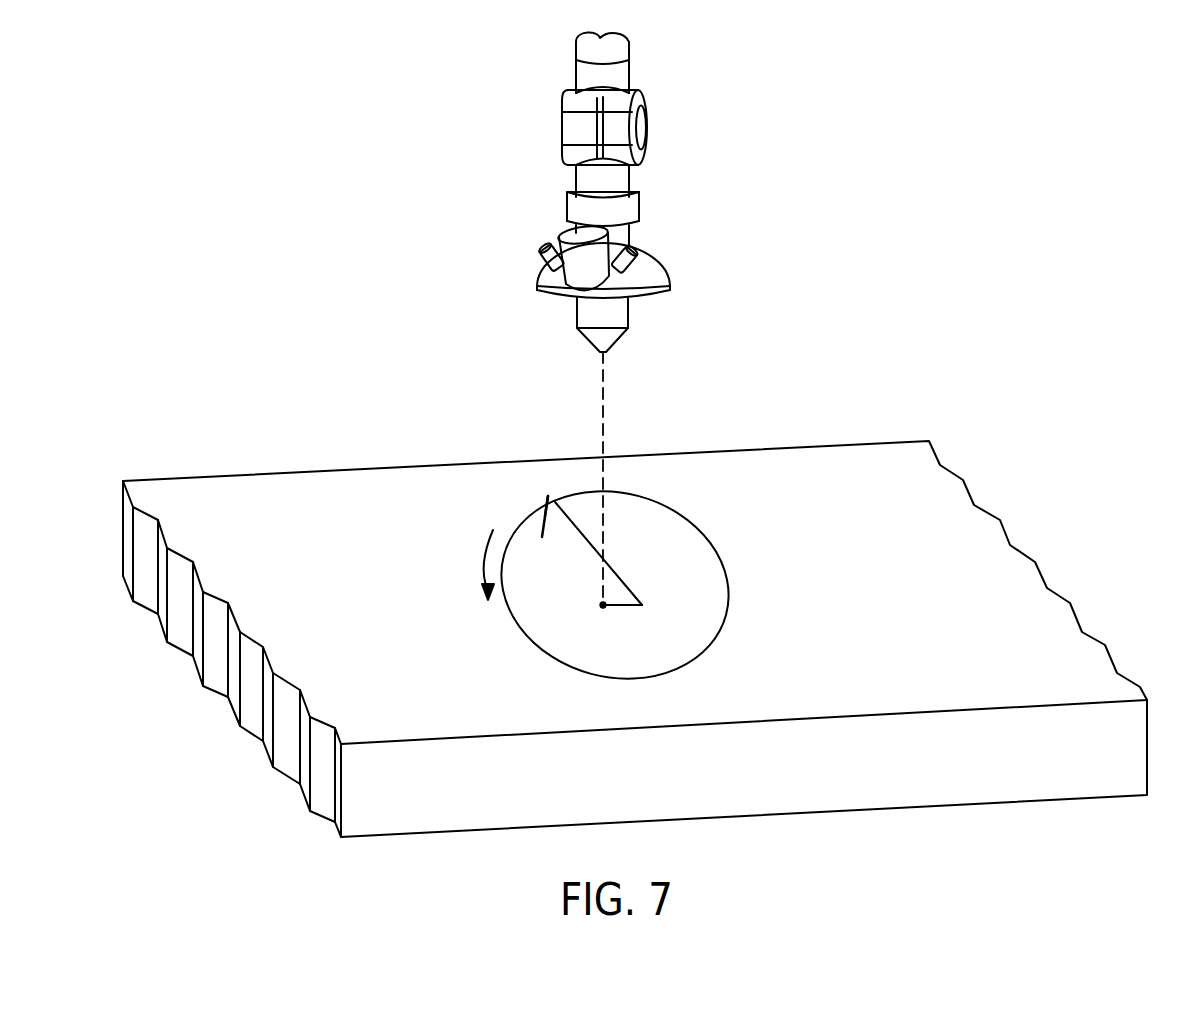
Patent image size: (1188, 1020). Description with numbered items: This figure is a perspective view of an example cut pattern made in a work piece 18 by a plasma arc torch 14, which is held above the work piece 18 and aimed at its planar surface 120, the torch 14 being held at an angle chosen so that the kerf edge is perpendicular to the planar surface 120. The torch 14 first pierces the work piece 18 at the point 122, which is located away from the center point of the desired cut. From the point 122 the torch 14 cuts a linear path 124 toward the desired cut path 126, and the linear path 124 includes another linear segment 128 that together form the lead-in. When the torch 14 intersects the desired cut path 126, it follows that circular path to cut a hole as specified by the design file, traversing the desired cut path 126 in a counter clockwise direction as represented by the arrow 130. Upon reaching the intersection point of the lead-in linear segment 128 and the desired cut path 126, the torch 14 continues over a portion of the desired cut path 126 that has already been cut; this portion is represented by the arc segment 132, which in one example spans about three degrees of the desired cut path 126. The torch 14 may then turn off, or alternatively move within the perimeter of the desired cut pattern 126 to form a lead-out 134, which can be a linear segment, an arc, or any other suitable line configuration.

The plasma arc torch 14 is at (632, 175).
The work piece 18 is at (1093, 637).
The planar surface 120 is at (1020, 681).
The point 122 is at (600, 605).
The linear path 124 is at (627, 607).
The desired cut path 126 is at (731, 603).
The linear segment 128 is at (618, 573).
The arrow 130 is at (485, 563).
The arc segment 132 is at (548, 496).
The lead-out 134 is at (542, 525).